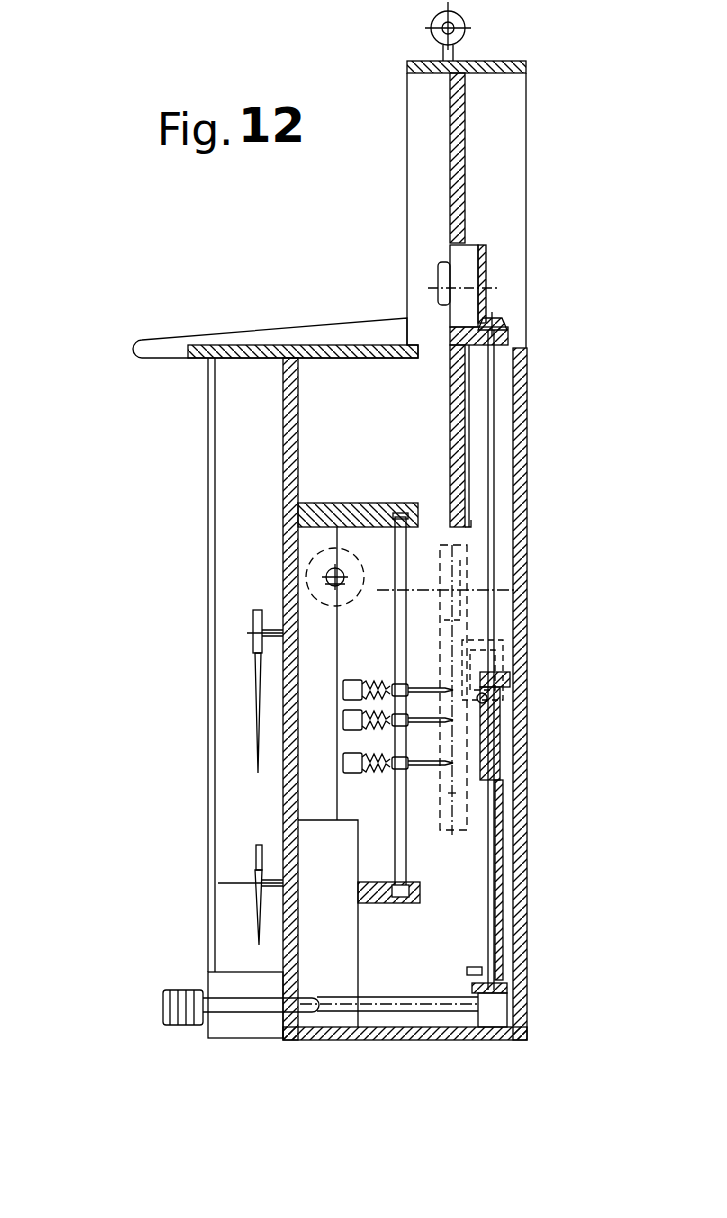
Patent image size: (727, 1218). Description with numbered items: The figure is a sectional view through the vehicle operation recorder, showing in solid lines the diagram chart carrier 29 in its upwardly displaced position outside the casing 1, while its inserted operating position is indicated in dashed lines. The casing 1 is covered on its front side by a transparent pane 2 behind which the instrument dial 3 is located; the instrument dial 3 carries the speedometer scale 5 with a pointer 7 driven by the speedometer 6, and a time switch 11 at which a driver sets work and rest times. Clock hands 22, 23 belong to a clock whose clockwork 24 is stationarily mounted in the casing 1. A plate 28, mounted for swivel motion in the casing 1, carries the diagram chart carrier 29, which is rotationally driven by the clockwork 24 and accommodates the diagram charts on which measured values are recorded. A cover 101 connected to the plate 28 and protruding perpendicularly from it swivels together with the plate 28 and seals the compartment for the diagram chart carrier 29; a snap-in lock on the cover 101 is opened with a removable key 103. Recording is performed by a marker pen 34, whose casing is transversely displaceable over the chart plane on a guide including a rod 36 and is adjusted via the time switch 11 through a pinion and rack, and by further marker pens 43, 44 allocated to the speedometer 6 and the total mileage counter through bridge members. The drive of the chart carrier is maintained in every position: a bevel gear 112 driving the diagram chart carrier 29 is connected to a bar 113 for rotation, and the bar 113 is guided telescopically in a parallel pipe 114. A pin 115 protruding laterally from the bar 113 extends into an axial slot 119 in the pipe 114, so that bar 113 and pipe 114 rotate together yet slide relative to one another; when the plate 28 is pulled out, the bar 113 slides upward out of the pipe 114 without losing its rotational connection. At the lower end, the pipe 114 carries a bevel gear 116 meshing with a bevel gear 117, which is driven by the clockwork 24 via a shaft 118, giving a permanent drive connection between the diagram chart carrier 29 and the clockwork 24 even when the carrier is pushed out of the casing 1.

The casing 1 is at (333, 335).
The transparent pane 2 is at (212, 436).
The instrument dial 3 is at (283, 490).
The speedometer scale 5 is at (233, 633).
The speedometer 6 is at (328, 673).
The pointer 7 is at (258, 718).
The time switch 11 is at (172, 993).
The clock hand 22 is at (258, 858).
The clock hand 23 is at (258, 918).
The clockwork 24 is at (332, 985).
The plate 28 is at (458, 155).
The diagram chart carrier 29 is at (438, 288).
The marker pen 34 is at (417, 690).
The rod 36 is at (400, 568).
The marker pen 43 is at (435, 720).
The marker pen 44 is at (422, 773).
The cover 101 is at (490, 58).
The key 103 is at (466, 24).
The bevel gear 112 is at (500, 325).
The bar 113 is at (493, 430).
The pipe 114 is at (503, 783).
The pin 115 is at (493, 703).
The axial slot 119 is at (503, 743).
The bevel gear 116 is at (510, 992).
The bevel gear 117 is at (478, 1020).
The shaft 118 is at (440, 1000).